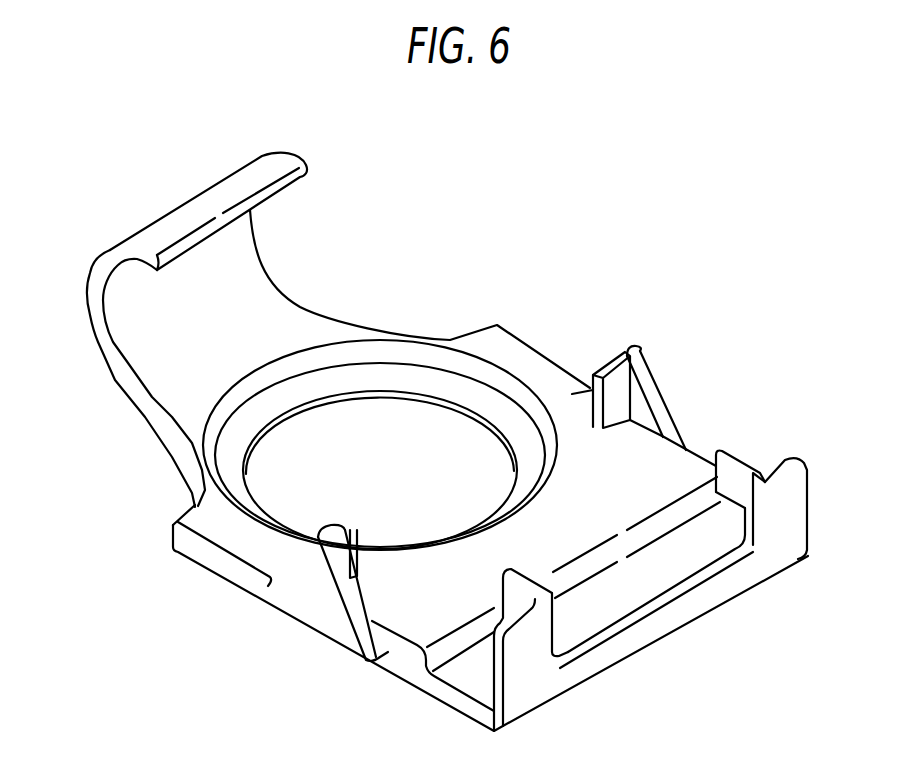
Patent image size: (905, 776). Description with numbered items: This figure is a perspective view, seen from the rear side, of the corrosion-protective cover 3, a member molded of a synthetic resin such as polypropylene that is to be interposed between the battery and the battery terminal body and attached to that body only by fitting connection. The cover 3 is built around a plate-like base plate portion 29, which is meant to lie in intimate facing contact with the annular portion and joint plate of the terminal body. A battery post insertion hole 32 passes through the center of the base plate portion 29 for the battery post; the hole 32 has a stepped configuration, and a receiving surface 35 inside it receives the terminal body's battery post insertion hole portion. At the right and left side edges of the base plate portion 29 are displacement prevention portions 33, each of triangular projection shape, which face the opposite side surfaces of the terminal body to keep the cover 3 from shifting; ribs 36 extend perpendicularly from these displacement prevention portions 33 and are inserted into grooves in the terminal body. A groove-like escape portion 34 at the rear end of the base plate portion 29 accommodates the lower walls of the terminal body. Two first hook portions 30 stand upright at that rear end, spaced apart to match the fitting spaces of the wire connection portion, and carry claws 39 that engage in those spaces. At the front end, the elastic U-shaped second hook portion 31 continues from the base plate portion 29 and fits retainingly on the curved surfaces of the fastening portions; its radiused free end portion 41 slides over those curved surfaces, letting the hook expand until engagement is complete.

The corrosion-protective cover 3 is at (466, 231).
The base plate portion 29 is at (502, 345).
The first hook portions 30 is at (527, 665).
The second hook portion 31 is at (92, 267).
The battery post insertion hole 32 is at (384, 410).
The displacement prevention portions 33 is at (308, 585).
The groove-like escape portion 34 is at (470, 678).
The receiving surface 35 is at (248, 430).
The ribs 36 is at (597, 378).
The claws 39 is at (545, 572).
The free end portion 41 is at (282, 187).